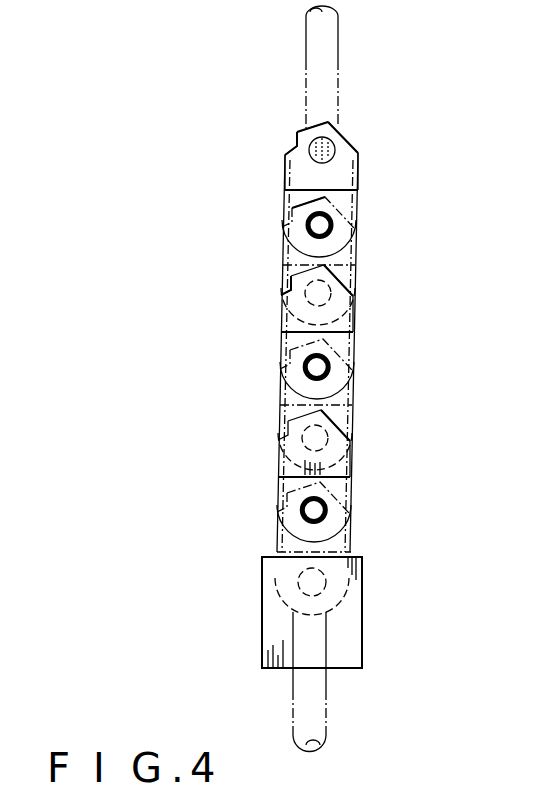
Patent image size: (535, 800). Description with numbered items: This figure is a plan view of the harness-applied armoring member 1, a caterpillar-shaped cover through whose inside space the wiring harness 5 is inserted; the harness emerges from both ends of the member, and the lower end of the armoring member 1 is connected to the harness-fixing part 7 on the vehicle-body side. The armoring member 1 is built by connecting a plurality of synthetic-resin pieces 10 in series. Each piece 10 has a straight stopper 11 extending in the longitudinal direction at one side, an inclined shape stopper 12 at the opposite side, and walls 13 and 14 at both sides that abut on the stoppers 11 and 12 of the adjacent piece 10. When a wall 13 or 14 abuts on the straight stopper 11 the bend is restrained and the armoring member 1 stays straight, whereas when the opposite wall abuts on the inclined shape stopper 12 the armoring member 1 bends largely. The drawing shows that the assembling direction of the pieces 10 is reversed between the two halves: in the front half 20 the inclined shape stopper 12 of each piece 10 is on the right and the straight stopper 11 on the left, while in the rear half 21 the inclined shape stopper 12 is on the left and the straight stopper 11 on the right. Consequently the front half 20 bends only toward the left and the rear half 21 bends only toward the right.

The harness-applied armoring member 1 is at (333, 318).
The wiring harness 5 is at (340, 60).
The harness-fixing part 7 is at (362, 608).
The piece 10 is at (283, 213).
The straight stopper 11 is at (293, 140).
The inclined shape stopper 12 is at (345, 133).
The wall 13 is at (284, 189).
The wall 14 is at (357, 192).
The front half 20 is at (328, 227).
The rear half 21 is at (359, 438).